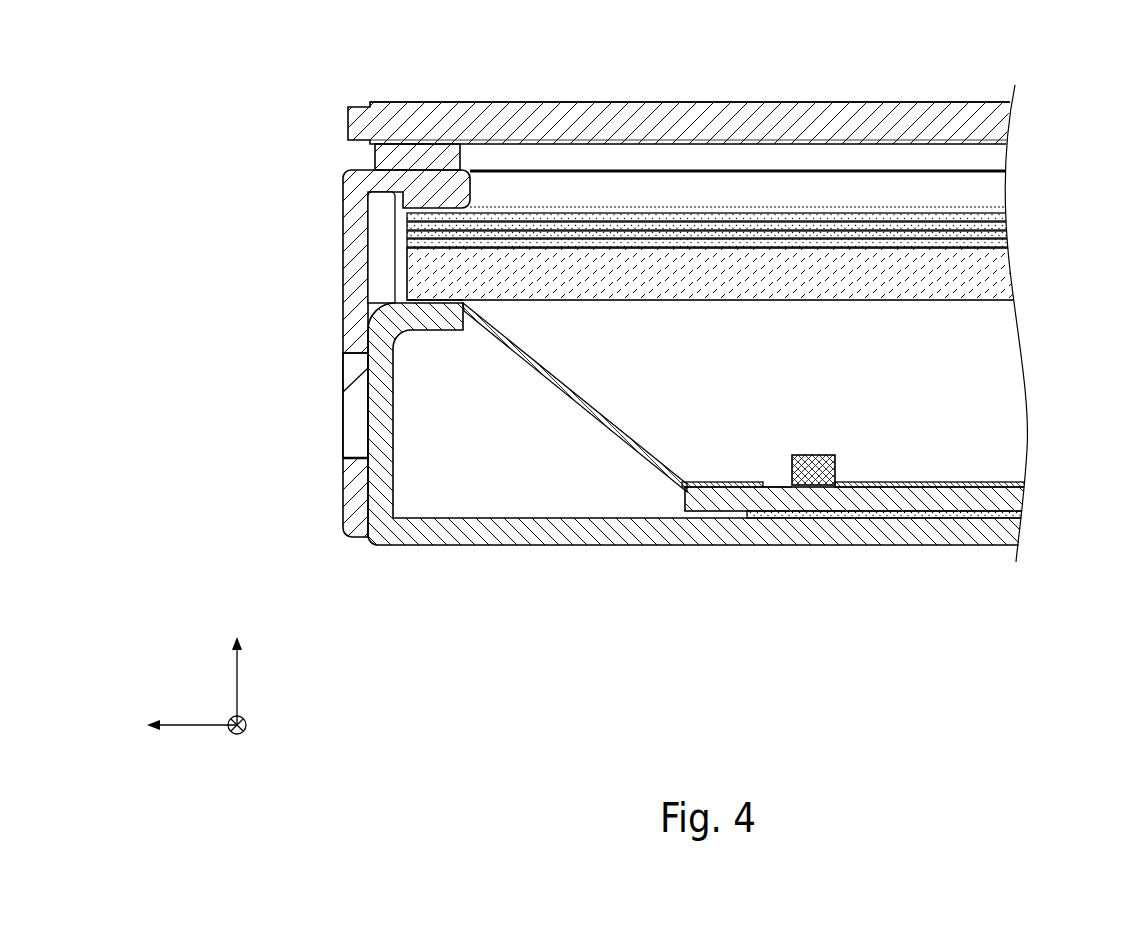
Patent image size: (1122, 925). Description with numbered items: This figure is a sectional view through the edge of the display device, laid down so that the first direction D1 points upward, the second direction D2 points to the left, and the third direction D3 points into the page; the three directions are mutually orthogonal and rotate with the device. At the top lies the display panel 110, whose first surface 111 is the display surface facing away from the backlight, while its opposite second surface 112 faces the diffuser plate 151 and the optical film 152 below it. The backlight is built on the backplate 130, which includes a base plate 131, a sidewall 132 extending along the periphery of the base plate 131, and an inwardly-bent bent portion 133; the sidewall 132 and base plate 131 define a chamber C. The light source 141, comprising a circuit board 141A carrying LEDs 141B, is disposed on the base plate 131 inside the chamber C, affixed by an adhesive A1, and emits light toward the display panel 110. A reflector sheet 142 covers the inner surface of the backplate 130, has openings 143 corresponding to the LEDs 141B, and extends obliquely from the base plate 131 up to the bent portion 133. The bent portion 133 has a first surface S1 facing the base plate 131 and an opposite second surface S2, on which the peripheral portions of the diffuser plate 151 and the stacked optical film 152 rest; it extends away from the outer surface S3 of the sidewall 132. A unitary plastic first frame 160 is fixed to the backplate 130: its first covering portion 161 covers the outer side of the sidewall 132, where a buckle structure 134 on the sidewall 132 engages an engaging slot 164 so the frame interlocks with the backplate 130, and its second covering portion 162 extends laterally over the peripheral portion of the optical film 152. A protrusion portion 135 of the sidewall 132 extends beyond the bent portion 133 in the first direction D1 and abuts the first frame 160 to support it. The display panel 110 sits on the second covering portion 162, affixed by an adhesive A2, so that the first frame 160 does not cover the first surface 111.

The display panel 110 is at (1012, 120).
The first surface 111 is at (775, 90).
The second surface 112 is at (701, 126).
The backplate 130 is at (667, 453).
The base plate 131 is at (601, 545).
The sidewall 132 is at (368, 486).
The bent portion 133 is at (451, 331).
The buckle structure 134 is at (355, 403).
The protrusion portion 135 is at (378, 259).
The light source 141 is at (857, 554).
The circuit board 141A is at (720, 506).
The LEDs 141B is at (817, 480).
The reflector sheet 142 is at (657, 463).
The openings 143 is at (854, 470).
The diffuser plate 151 is at (1012, 278).
The optical film 152 is at (1025, 213).
The first frame 160 is at (320, 248).
The first covering portion 161 is at (345, 220).
The second covering portion 162 is at (412, 172).
The engaging slot 164 is at (333, 376).
The adhesive A1 is at (923, 516).
The adhesive A2 is at (422, 148).
The chamber C is at (477, 506).
The first surface S1 is at (434, 344).
The second surface S2 is at (432, 288).
The outer surface S3 is at (355, 439).
The first direction D1 is at (237, 664).
The second direction D2 is at (166, 725).
The third direction D3 is at (256, 742).